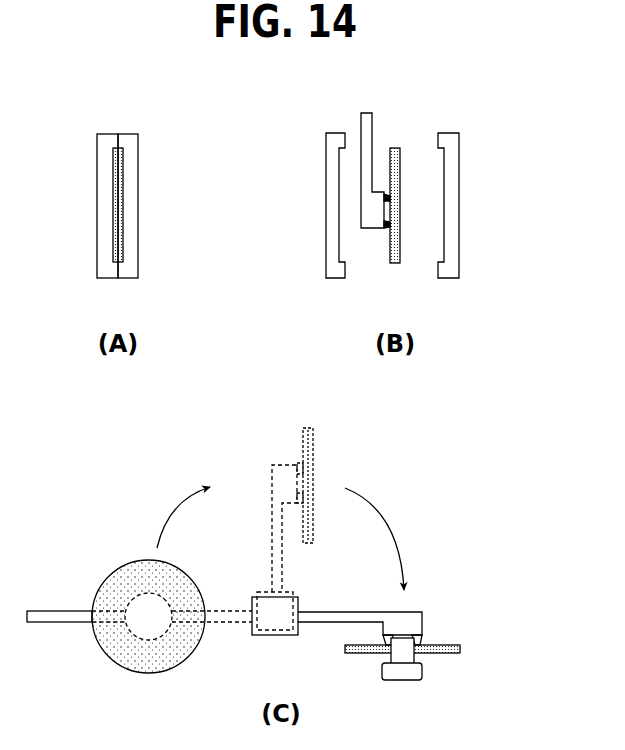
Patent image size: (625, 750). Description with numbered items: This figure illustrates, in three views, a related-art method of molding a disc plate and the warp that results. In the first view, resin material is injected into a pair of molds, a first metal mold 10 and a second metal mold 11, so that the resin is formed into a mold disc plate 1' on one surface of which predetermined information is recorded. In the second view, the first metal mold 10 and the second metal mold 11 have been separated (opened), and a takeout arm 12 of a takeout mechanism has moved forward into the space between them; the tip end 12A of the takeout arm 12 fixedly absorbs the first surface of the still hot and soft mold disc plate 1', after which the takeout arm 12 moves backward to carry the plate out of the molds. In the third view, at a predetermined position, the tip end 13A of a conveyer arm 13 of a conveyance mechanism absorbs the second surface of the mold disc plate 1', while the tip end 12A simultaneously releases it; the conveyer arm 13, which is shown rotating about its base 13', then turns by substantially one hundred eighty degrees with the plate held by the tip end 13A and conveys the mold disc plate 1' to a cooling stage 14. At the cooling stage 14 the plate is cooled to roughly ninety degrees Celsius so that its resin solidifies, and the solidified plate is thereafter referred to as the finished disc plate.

The first metal mold 10 is at (100, 143).
The second metal mold 11 is at (132, 143).
The mold disc plate 1' is at (295, 383).
The takeout arm 12 is at (366, 136).
The tip end of the takeout arm 12A is at (388, 229).
The conveyer arm 13 is at (318, 550).
The tip end of the conveyer arm 13A is at (297, 463).
The rotation shaft / base of arm 13 13' is at (253, 633).
The cooling stage 14 is at (436, 668).